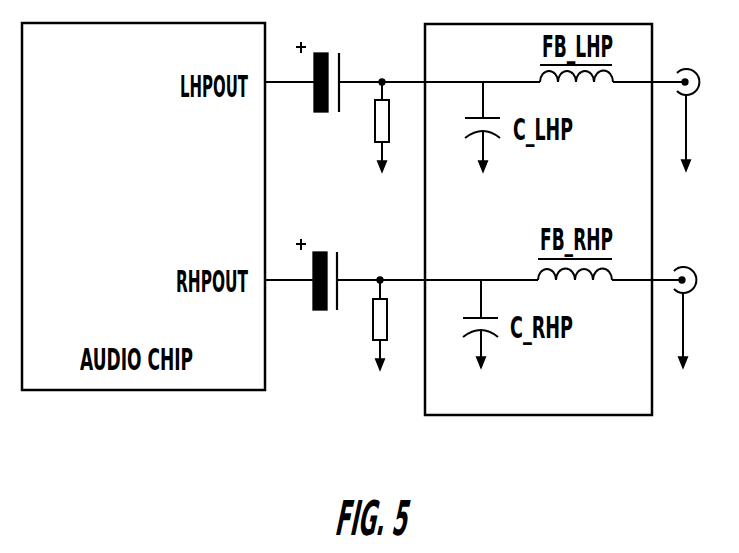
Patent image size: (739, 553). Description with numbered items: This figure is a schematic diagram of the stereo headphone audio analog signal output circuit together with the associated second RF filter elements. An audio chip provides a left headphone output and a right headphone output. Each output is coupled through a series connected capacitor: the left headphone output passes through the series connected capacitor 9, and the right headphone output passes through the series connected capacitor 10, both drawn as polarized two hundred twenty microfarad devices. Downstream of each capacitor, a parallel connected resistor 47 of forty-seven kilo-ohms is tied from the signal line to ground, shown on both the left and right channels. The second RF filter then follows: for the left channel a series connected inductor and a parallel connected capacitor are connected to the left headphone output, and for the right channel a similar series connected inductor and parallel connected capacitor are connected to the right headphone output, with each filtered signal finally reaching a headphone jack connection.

The 220 microfarad coupling capacitor (left headphone output) 9 is at (317, 94).
The 220 microfarad coupling capacitor (right headphone output) 10 is at (312, 292).
The 47 kilo-ohm pull-down resistor 47 is at (382, 244).